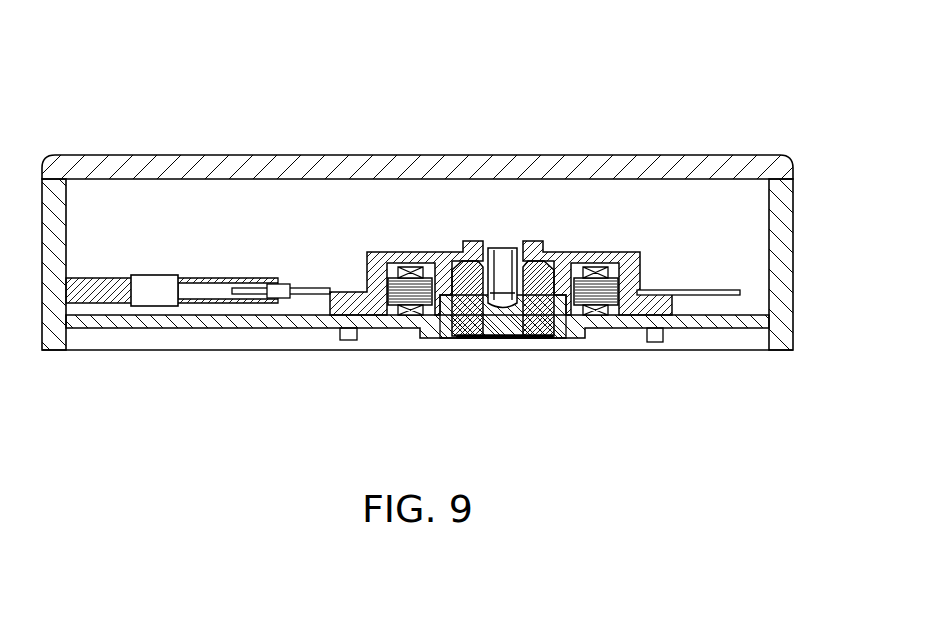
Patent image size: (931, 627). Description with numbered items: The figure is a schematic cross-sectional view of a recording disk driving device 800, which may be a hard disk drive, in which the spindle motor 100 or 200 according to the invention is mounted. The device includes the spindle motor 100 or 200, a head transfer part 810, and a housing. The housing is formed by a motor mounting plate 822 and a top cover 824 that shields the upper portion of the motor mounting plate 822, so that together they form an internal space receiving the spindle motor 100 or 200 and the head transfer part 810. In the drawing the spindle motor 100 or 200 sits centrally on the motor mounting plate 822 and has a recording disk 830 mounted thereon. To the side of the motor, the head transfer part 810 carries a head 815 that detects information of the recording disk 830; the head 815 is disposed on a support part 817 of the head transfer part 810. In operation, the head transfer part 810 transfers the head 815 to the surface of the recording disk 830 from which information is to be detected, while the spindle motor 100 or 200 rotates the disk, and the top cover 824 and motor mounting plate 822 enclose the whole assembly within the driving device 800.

The recording disk driving device 800 is at (428, 25).
The top cover 824 is at (222, 168).
The motor mounting plate 822 is at (783, 332).
The head transfer part 810 is at (153, 320).
The head 815 is at (284, 294).
The support part 817 is at (234, 300).
The spindle motor 100 is at (501, 206).
The spindle motor 200 is at (514, 228).
The recording disk 830 is at (687, 292).